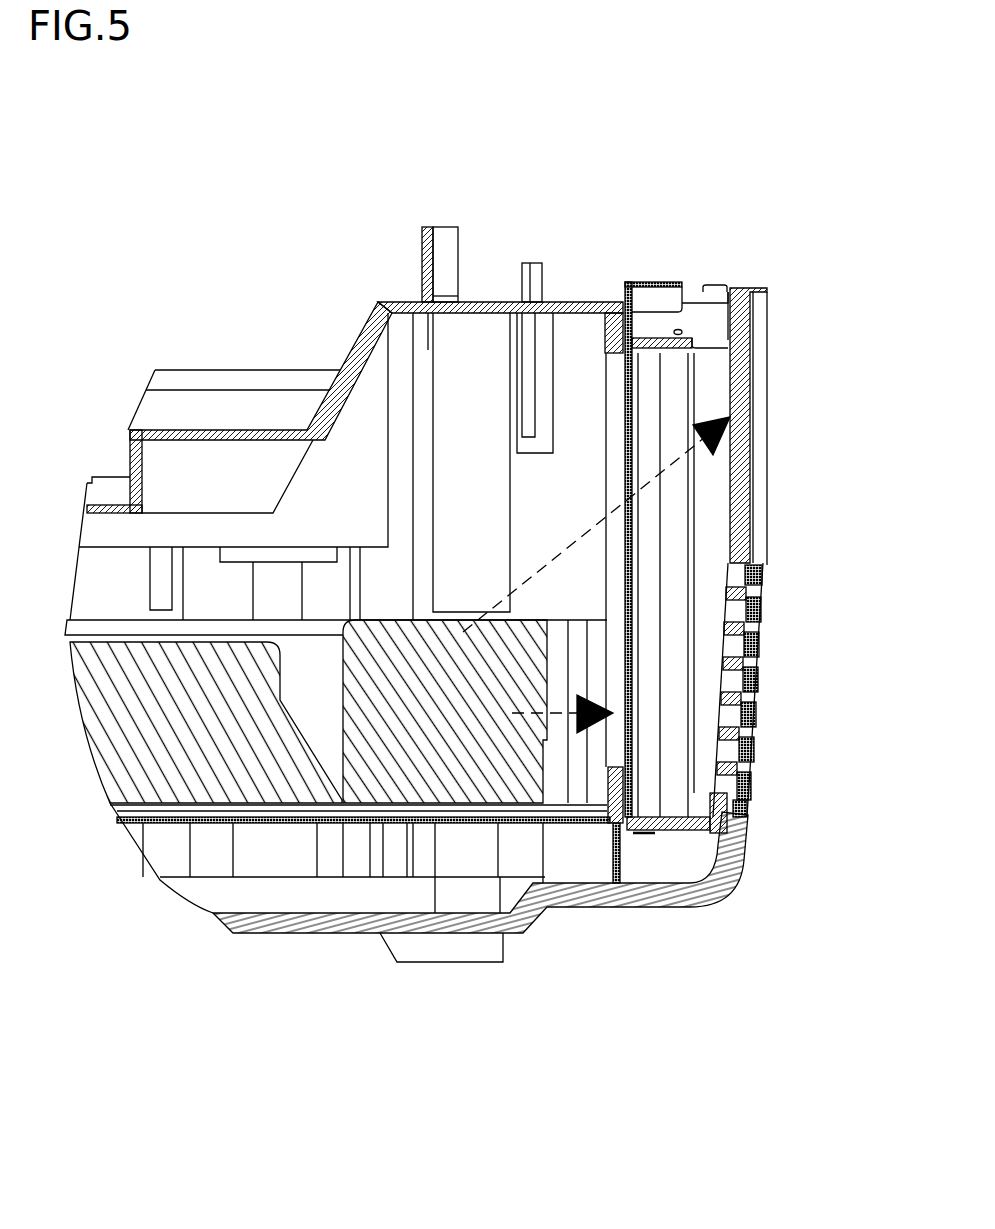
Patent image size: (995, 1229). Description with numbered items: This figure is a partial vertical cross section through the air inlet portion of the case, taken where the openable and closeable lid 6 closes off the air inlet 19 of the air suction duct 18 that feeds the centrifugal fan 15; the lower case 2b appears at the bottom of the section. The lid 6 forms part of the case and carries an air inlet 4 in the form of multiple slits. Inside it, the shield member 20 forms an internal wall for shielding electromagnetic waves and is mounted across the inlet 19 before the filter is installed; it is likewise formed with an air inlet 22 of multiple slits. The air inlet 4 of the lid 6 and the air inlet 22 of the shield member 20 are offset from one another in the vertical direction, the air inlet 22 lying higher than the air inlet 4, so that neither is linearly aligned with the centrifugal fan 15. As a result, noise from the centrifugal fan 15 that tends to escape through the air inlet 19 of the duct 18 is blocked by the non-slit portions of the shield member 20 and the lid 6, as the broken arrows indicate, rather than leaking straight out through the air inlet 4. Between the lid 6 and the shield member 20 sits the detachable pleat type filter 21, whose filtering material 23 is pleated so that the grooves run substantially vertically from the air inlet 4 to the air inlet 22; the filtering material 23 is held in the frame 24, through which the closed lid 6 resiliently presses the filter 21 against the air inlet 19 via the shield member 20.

The air suction duct 18 is at (483, 300).
The air inlet of the shield member 22 is at (622, 437).
The air inlet 19 is at (603, 353).
The frame 24 is at (663, 338).
The filtering material 23 is at (670, 400).
The lid 6 is at (767, 443).
The air inlet of the lid 4 is at (757, 683).
The centrifugal fan 15 is at (333, 800).
The shield member 20 is at (622, 735).
The filter 21 is at (650, 840).
The lower case 2b is at (667, 917).